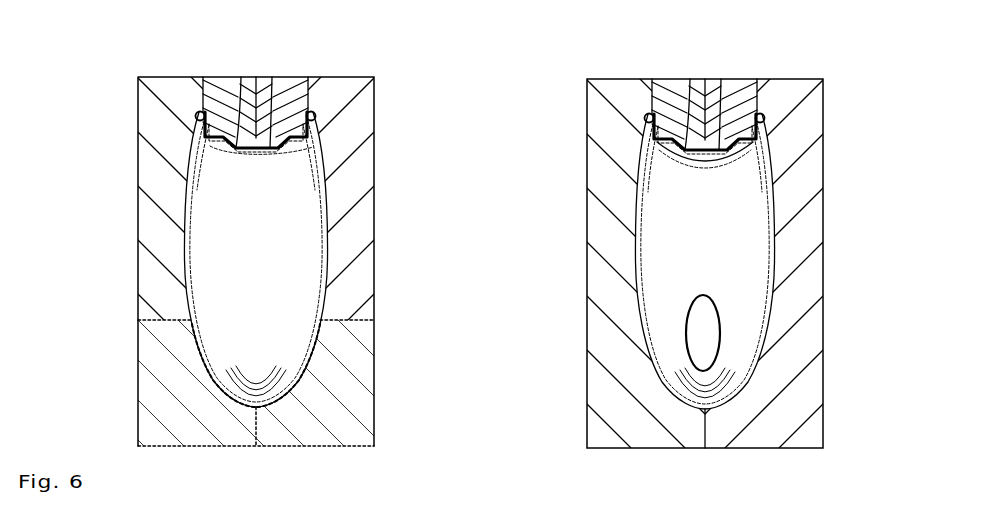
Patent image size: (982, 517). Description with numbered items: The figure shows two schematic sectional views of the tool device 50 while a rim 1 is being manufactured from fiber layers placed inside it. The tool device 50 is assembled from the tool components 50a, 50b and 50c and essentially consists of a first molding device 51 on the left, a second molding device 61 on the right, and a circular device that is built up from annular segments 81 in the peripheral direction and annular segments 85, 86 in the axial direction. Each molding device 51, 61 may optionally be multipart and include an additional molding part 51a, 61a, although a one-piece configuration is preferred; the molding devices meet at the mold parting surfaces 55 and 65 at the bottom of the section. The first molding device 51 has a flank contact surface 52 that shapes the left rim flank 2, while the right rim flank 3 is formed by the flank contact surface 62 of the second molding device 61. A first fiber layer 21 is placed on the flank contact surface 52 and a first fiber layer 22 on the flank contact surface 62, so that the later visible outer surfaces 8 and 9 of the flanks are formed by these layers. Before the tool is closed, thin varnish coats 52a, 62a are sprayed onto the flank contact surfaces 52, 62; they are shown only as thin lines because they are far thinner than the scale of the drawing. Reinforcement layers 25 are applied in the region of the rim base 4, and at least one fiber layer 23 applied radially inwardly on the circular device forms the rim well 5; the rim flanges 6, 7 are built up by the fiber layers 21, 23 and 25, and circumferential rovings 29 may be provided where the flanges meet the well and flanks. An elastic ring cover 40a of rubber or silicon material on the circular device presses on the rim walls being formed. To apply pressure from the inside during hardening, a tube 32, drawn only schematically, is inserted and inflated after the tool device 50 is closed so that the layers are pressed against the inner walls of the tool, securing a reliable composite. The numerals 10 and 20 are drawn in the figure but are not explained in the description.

The rim 1 is at (178, 130).
The rim flank 2 is at (191, 244).
The rim flank 3 is at (321, 244).
The rim base 4 is at (251, 376).
The rim well 5 is at (257, 160).
The rim flange 6 is at (633, 132).
The rim flange 7 is at (781, 133).
The outer surface 8 is at (649, 122).
The outer surface 9 is at (767, 123).
The container interior 10 is at (717, 238).
The blow-molded container 20 is at (626, 203).
The fiber layer 21 is at (190, 278).
The fiber layer 22 is at (322, 282).
The fiber layer 23 is at (272, 157).
The reinforcement layer 25 is at (200, 176).
The circumferential roving 29 is at (741, 149).
The tube 32 is at (710, 334).
The ring cover 40a is at (200, 111).
The tool device 50 is at (128, 52).
The tool component 50a is at (133, 230).
The tool component 50b is at (378, 236).
The tool component 50c is at (239, 67).
The first molding device 51 is at (150, 282).
The molding part 51a is at (172, 317).
The flank contact surface 52 is at (184, 230).
The varnish coat 52a is at (185, 194).
The mold parting surface 55 is at (701, 418).
The second molding device 61 is at (357, 281).
The molding part 61a is at (357, 391).
The flank contact surface 62 is at (331, 228).
The varnish coat 62a is at (329, 199).
The mold parting surface 65 is at (711, 425).
The annular segment 81 is at (222, 83).
The annular segment 85 is at (259, 98).
The annular segment 86 is at (300, 80).